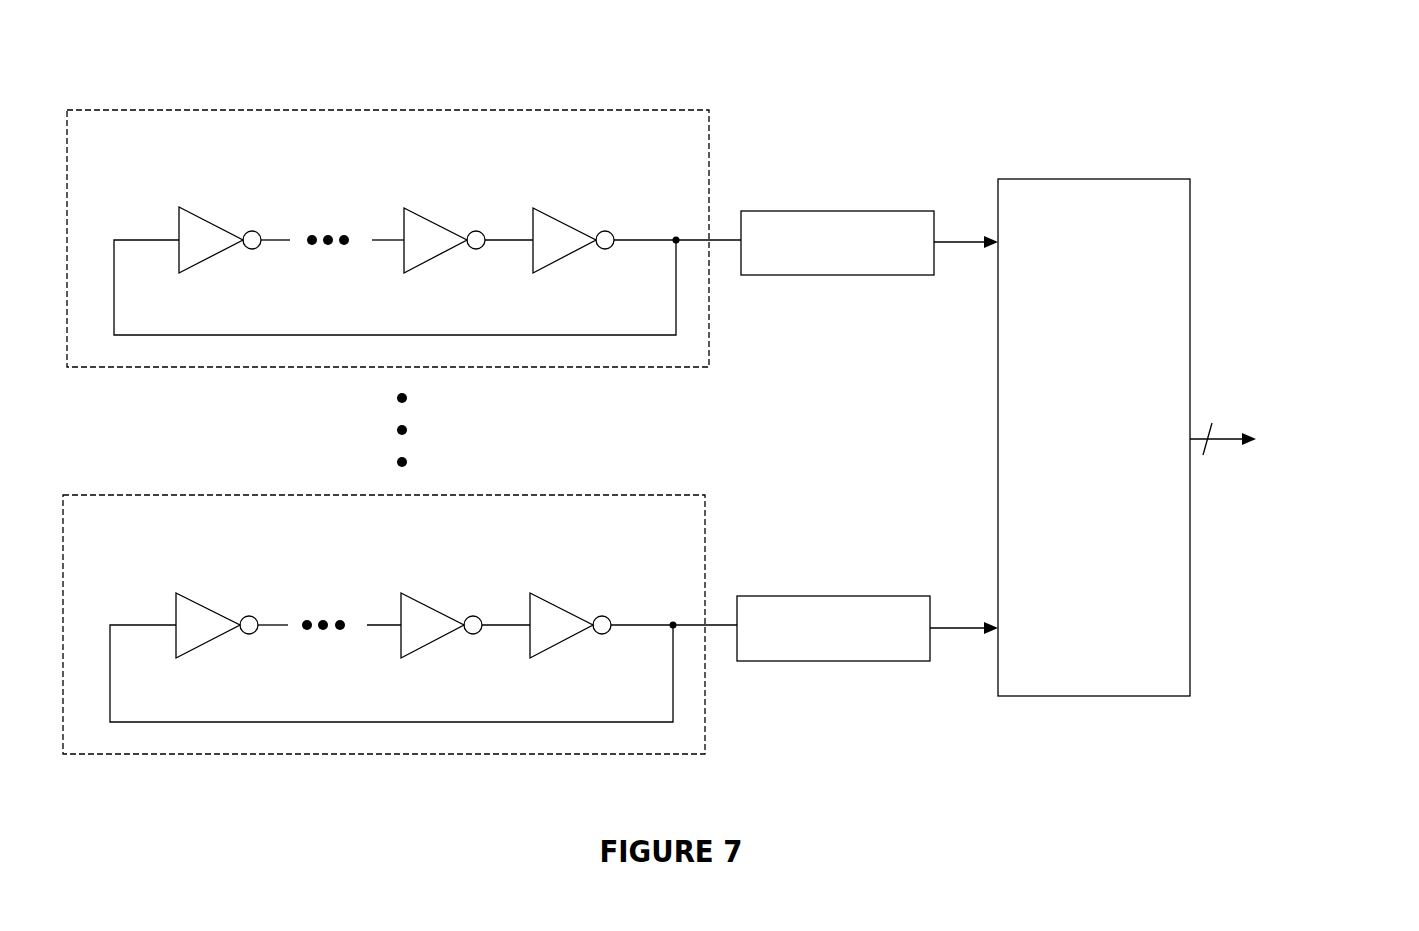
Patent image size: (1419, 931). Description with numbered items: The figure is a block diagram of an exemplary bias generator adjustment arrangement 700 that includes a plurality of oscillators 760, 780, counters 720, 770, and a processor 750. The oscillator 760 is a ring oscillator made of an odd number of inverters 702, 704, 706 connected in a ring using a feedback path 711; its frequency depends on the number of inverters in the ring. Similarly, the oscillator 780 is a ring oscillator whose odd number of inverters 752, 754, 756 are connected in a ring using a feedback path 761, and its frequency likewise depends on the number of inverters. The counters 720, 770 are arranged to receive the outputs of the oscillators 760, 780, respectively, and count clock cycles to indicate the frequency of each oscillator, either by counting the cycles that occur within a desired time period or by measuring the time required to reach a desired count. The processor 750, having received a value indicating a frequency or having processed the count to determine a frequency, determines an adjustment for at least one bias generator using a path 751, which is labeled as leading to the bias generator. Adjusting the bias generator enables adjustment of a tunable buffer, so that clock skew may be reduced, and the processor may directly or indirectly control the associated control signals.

The bias generator adjustment arrangement 700 is at (1328, 79).
The oscillator 760 is at (650, 110).
The inverter 702 is at (212, 222).
The inverter 704 is at (440, 222).
The inverter 706 is at (568, 222).
The feedback path 711 is at (662, 238).
The counter 720 is at (775, 211).
The oscillator 780 is at (647, 496).
The inverter 752 is at (209, 606).
The inverter 754 is at (436, 606).
The inverter 756 is at (563, 606).
The feedback path 761 is at (658, 624).
The counter 770 is at (772, 596).
The processor 750 is at (1030, 179).
The path 751 is at (1222, 434).